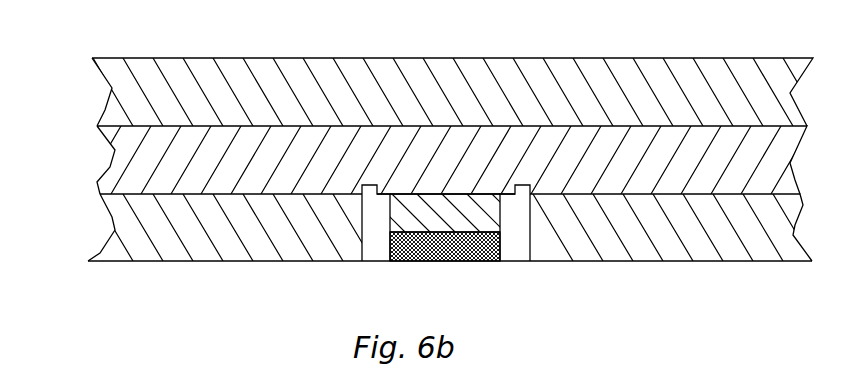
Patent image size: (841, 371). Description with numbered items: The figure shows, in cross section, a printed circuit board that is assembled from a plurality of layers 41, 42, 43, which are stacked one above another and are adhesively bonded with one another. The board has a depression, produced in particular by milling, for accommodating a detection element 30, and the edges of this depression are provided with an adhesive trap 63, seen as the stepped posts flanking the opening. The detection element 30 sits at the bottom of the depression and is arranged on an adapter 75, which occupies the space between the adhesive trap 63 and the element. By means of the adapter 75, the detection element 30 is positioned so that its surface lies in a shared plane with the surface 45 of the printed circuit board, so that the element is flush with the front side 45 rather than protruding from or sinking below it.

The layer 41 is at (150, 82).
The layer 42 is at (150, 165).
The layer 43 is at (147, 250).
The front side 45 is at (622, 262).
The adhesive trap 63 is at (360, 200).
The adapter 75 is at (440, 213).
The detection element 30 is at (470, 262).